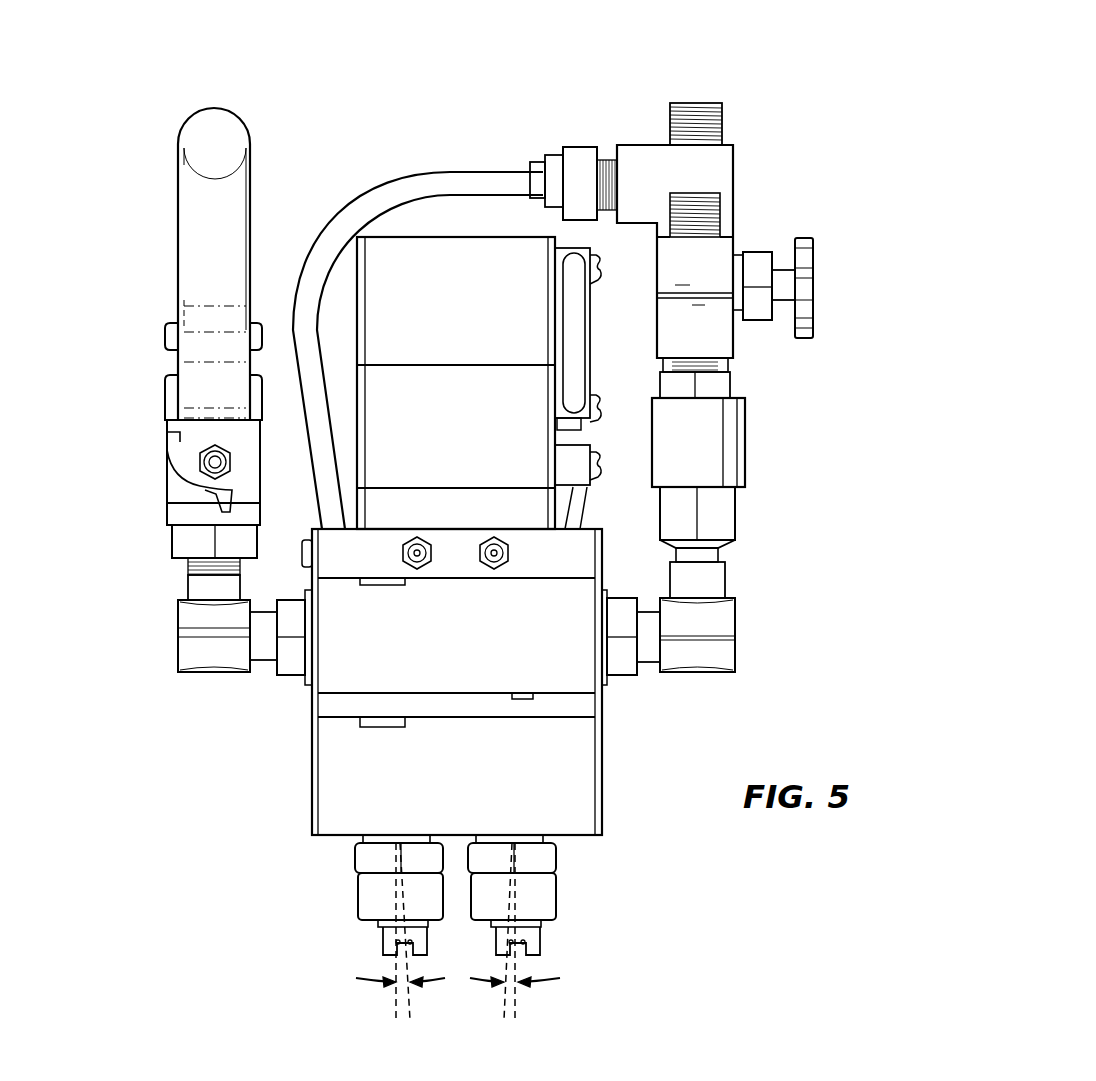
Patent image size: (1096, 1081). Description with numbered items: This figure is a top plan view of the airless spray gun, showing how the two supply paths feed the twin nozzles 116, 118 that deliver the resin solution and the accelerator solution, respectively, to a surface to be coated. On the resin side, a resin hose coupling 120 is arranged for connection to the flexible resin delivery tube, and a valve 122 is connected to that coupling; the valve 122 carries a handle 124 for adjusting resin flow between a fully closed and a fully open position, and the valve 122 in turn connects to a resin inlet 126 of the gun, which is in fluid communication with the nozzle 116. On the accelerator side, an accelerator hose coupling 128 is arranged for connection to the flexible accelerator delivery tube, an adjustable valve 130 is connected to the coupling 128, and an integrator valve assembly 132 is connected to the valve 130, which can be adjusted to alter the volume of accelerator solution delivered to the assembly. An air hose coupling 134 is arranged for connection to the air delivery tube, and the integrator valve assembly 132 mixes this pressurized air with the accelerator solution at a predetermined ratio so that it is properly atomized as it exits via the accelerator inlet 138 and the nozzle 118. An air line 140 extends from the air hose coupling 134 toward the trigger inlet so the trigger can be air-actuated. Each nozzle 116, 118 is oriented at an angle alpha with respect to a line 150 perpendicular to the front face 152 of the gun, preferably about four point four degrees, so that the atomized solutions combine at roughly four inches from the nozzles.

The nozzle 116 is at (355, 900).
The nozzle 118 is at (560, 900).
The resin hose coupling 120 is at (165, 336).
The valve 122 is at (165, 483).
The handle 124 is at (190, 210).
The resin inlet 126 is at (178, 635).
The accelerator hose coupling 128 is at (727, 212).
The adjustable valve 130 is at (818, 292).
The integrator valve assembly 132 is at (745, 445).
The air hose coupling 134 is at (700, 100).
The accelerator inlet 138 is at (740, 640).
The air line 140 is at (468, 170).
The line 150 is at (395, 1008).
The front face 152 is at (338, 836).